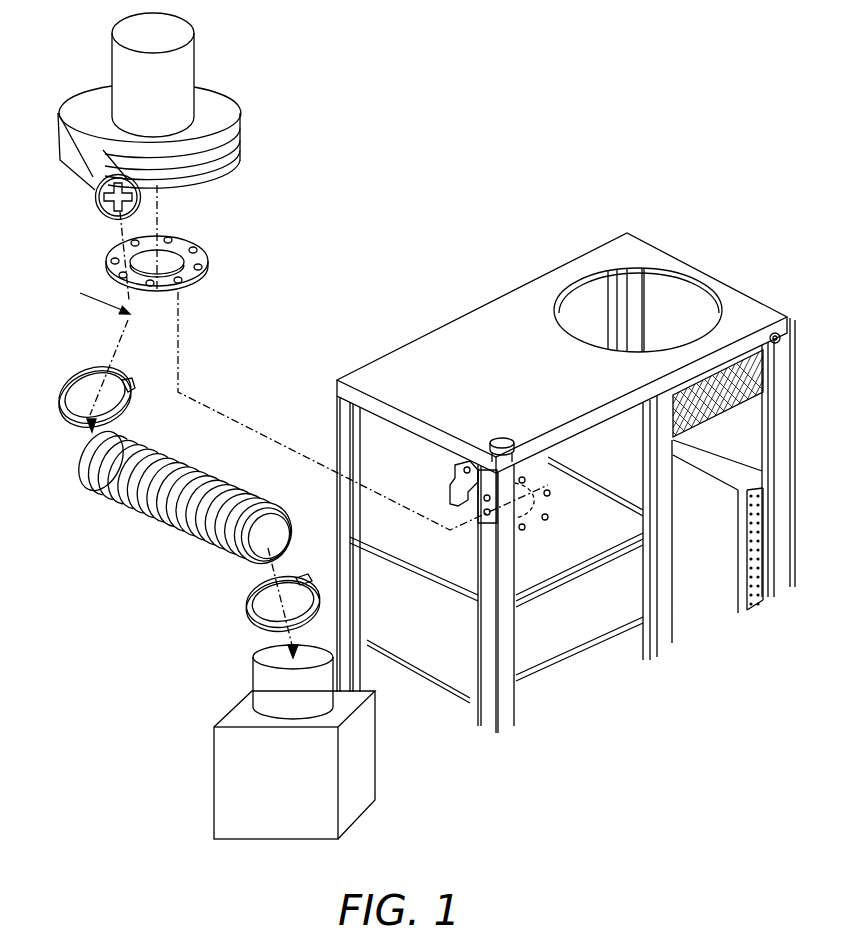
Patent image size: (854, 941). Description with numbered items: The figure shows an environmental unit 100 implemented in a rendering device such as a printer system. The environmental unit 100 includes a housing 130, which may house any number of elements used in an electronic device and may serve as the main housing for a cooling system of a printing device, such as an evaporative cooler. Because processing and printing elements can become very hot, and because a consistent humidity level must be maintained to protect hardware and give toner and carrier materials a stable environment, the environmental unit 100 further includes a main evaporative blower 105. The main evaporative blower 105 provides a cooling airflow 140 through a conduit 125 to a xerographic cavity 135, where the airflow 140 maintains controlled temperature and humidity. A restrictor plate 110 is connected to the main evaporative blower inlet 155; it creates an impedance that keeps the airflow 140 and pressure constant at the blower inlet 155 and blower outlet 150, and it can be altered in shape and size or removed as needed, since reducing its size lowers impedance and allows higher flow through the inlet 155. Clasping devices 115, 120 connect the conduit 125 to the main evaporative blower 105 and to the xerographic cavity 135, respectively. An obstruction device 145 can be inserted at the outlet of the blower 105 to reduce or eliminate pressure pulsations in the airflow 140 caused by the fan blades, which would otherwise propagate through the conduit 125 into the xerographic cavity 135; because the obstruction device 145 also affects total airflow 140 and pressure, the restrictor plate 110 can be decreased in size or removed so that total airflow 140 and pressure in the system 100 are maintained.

The environmental unit 100 is at (485, 140).
The main evaporative blower 105 is at (205, 62).
The restrictor plate 110 is at (208, 262).
The clasping device 115 is at (84, 368).
The clasping device 120 is at (250, 586).
The conduit 125 is at (160, 520).
The housing 130 is at (726, 282).
The xerographic cavity 135 is at (213, 760).
The cooling airflow 140 is at (90, 295).
The obstruction device 145 is at (99, 210).
The blower outlet 150 is at (150, 211).
The main evaporative blower inlet 155 is at (210, 181).